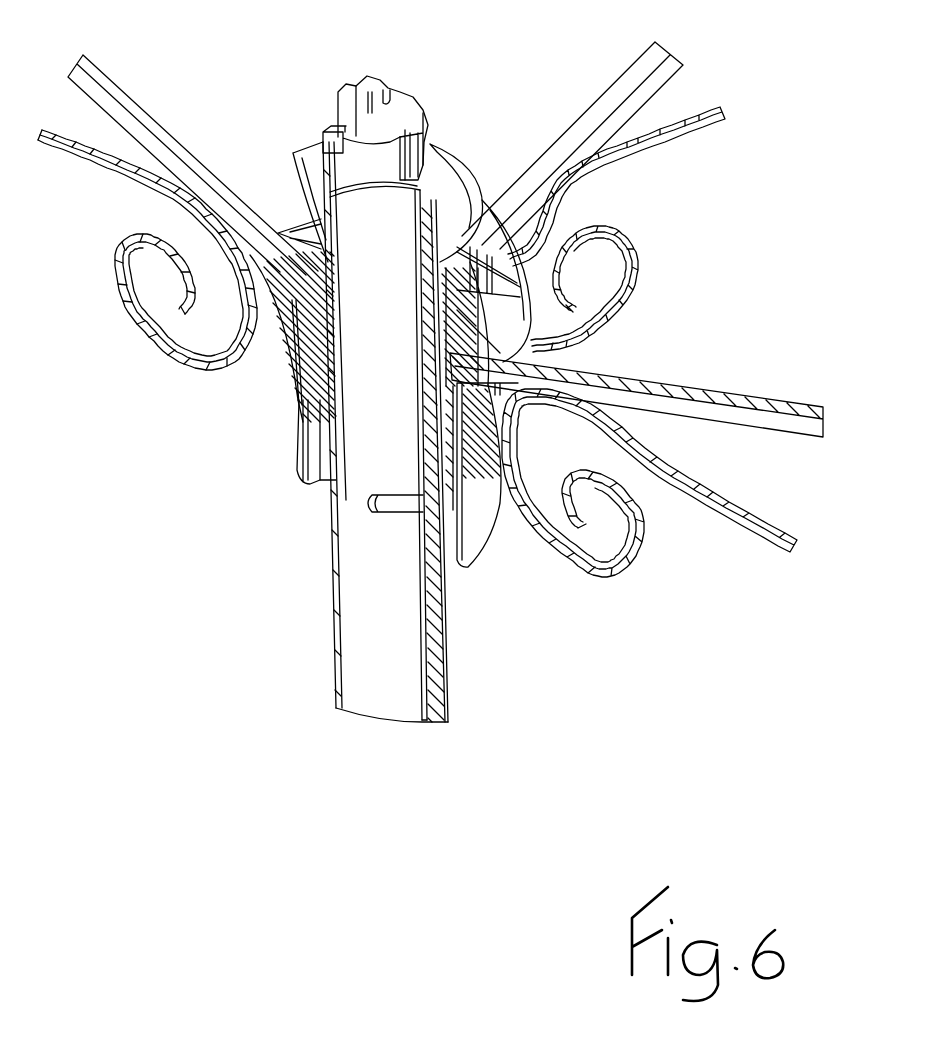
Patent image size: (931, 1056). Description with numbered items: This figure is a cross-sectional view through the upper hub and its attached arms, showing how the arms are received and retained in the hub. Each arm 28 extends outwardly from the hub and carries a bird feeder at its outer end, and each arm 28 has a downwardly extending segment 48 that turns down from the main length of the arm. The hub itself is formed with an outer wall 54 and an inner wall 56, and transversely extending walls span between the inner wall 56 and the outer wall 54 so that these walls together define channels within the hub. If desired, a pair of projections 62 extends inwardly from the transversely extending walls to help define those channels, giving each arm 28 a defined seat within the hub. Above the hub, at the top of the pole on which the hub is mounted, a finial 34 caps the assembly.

The arm 28 is at (143, 110).
The finial 34 is at (410, 97).
The downwardly extending segment 48 is at (120, 173).
The outer wall 54 is at (297, 423).
The inner wall 56 is at (330, 477).
The projections 62 is at (300, 327).